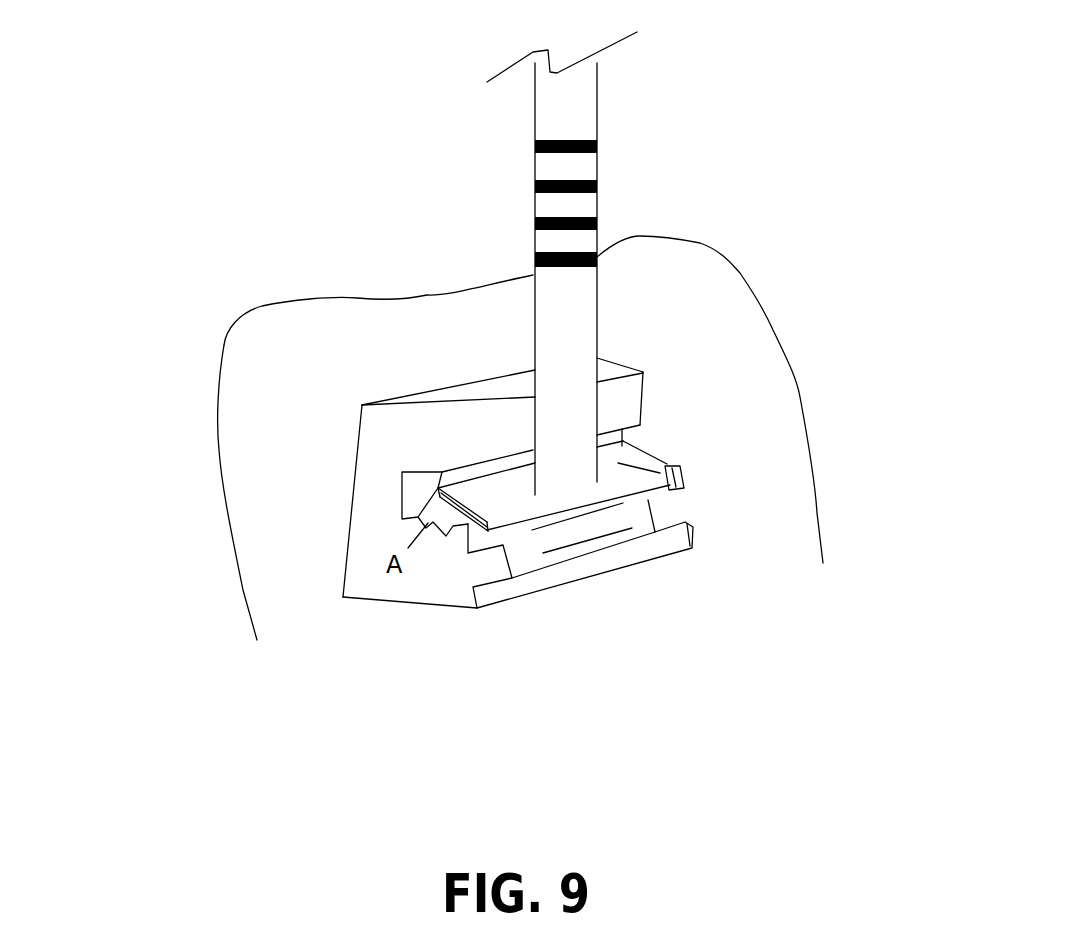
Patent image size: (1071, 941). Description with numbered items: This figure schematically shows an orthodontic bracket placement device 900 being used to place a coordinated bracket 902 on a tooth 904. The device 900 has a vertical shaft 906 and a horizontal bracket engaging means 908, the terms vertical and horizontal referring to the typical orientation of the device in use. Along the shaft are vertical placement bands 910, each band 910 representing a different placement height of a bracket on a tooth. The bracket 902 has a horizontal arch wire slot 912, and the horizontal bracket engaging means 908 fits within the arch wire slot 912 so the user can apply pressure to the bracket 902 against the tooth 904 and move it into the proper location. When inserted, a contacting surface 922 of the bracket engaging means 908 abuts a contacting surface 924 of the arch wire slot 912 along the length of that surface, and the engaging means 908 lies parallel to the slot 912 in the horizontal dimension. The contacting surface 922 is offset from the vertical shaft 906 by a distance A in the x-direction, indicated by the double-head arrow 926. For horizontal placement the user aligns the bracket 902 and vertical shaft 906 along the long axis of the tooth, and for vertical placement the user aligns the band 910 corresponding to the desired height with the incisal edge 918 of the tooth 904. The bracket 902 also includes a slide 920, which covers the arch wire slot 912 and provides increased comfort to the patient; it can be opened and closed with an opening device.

The orthodontic bracket placement device 900 is at (722, 69).
The coordinated bracket 902 is at (380, 428).
The tooth 904 is at (240, 410).
The vertical shaft 906 is at (575, 297).
The horizontal bracket engaging means 908 is at (683, 486).
The vertical placement bands 910 is at (597, 147).
The horizontal arch wire slot 912 is at (417, 486).
The incisal edge 918 is at (419, 290).
The slide 920 is at (533, 577).
The contacting surface of bracket engaging means 922 is at (494, 462).
The contacting surface of arch wire slot 924 is at (404, 504).
The double-head arrow 926 is at (658, 439).